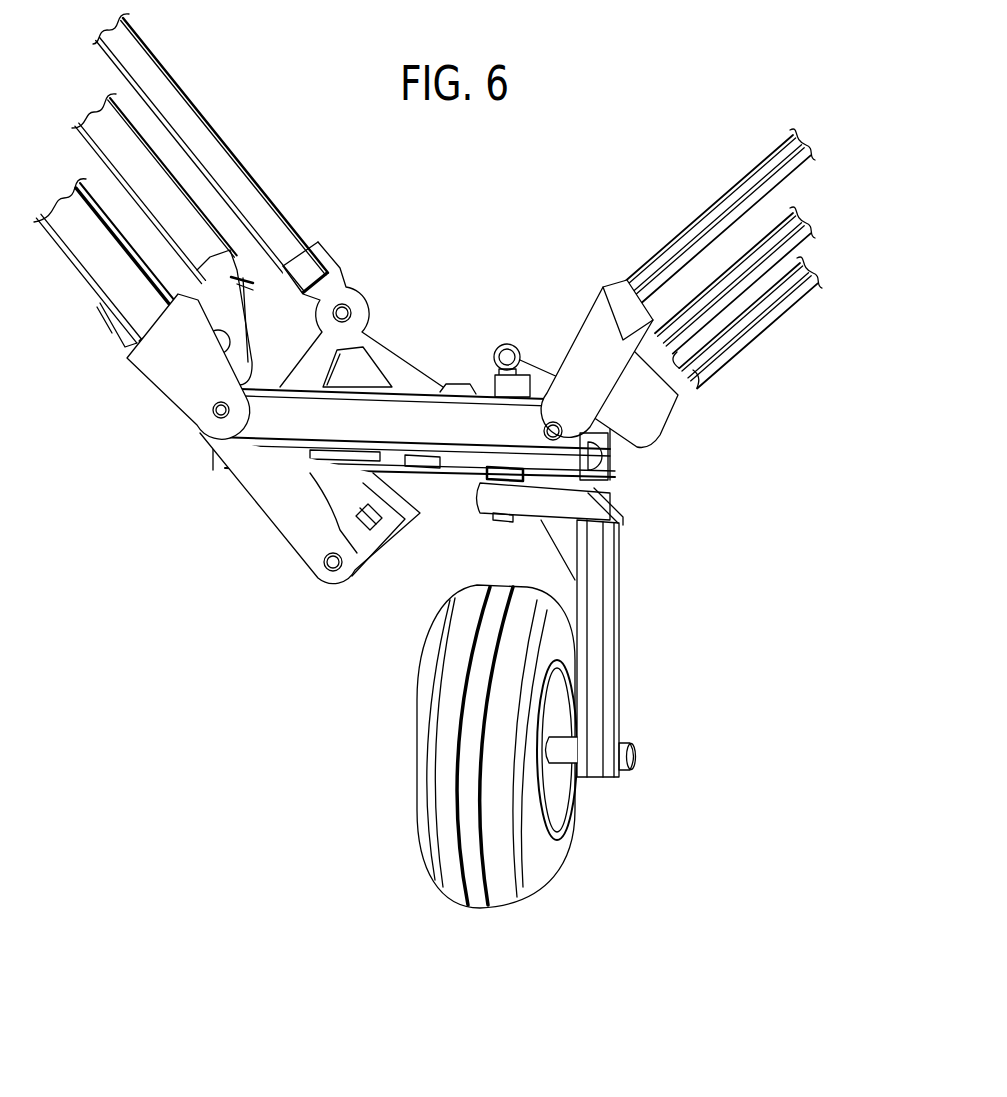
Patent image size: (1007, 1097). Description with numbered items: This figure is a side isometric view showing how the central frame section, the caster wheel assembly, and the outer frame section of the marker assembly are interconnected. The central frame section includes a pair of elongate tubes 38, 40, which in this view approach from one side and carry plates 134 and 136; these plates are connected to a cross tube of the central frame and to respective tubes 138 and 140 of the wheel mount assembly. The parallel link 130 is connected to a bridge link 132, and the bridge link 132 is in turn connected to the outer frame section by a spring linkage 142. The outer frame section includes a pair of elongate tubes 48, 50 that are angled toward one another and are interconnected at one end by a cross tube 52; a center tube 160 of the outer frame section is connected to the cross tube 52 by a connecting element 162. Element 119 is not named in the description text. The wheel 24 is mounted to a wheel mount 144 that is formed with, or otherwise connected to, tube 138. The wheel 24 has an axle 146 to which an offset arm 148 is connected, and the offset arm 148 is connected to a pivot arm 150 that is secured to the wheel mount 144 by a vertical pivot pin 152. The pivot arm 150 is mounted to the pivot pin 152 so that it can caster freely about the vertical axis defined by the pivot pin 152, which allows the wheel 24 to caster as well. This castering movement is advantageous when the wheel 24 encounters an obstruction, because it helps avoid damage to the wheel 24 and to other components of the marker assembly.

The wheel 24 is at (508, 902).
The elongate tube 38 is at (93, 266).
The elongate tube 40 is at (118, 227).
The elongate tube 48 is at (739, 283).
The elongate tube 50 is at (765, 320).
The cross tube 52 is at (672, 442).
The drawbar 119 is at (102, 128).
The parallel link 130 is at (276, 213).
The bridge link 132 is at (401, 353).
The plate 134 is at (178, 392).
The plate 136 is at (253, 383).
The tube 138 is at (297, 432).
The tube 140 is at (425, 475).
The spring linkage 142 is at (387, 558).
The wheel mount 144 is at (465, 397).
The axle 146 is at (565, 757).
The offset arm 148 is at (608, 655).
The pivot arm 150 is at (533, 510).
The vertical pivot pin 152 is at (523, 375).
The center tube 160 is at (675, 242).
The connecting element 162 is at (615, 297).